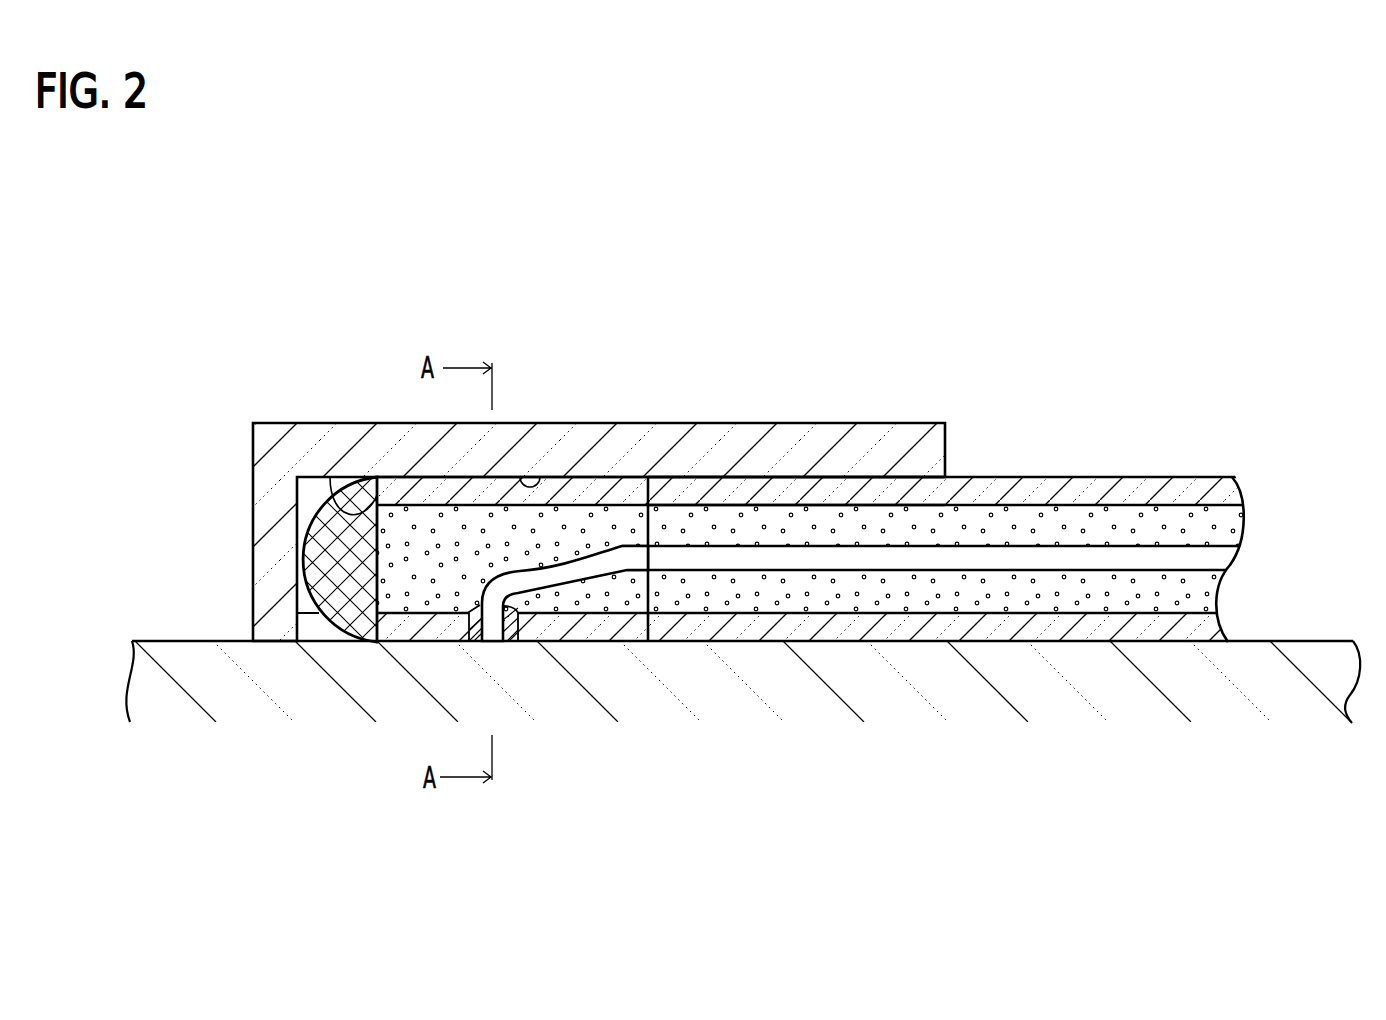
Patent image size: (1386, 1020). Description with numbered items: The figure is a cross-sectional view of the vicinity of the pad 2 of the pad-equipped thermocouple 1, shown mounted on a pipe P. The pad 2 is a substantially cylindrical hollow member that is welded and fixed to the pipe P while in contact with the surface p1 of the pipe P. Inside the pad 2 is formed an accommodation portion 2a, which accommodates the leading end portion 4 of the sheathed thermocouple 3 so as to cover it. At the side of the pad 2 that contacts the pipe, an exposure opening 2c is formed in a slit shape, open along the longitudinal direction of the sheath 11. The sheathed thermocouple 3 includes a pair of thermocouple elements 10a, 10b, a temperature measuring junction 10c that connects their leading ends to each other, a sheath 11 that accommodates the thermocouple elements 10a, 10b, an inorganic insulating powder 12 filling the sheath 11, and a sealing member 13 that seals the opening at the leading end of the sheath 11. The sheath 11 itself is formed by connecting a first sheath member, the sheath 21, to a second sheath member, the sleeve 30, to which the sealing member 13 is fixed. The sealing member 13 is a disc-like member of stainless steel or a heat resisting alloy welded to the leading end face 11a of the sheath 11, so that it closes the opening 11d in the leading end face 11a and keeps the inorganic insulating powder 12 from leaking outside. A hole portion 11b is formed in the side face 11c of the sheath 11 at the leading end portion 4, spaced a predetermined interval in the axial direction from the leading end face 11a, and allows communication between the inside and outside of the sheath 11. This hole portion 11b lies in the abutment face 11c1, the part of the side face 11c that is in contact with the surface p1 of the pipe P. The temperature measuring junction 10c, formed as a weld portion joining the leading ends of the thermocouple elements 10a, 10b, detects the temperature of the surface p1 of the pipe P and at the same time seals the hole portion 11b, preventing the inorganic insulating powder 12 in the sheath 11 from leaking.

The pad-equipped thermocouple 1 is at (751, 530).
The pad 2 is at (592, 549).
The accommodation portion 2a is at (530, 478).
The exposure opening 2c is at (318, 628).
The sheathed thermocouple 3 is at (800, 577).
The leading end portion 4 is at (680, 475).
The thermocouple element 10a is at (893, 560).
The thermocouple element 10b is at (936, 558).
The temperature measuring junction 10c is at (477, 642).
The sheath 11 is at (800, 577).
The leading end face 11a is at (353, 638).
The hole portion 11b is at (495, 642).
The side face 11c is at (968, 477).
The abutment face 11c1 is at (740, 642).
The opening 11d is at (333, 497).
The inorganic insulating powder 12 is at (1062, 597).
The sealing member 13 is at (280, 473).
The sheath 21 is at (762, 492).
The sleeve 30 is at (622, 492).
The pipe P is at (751, 628).
The surface p1 is at (1320, 641).